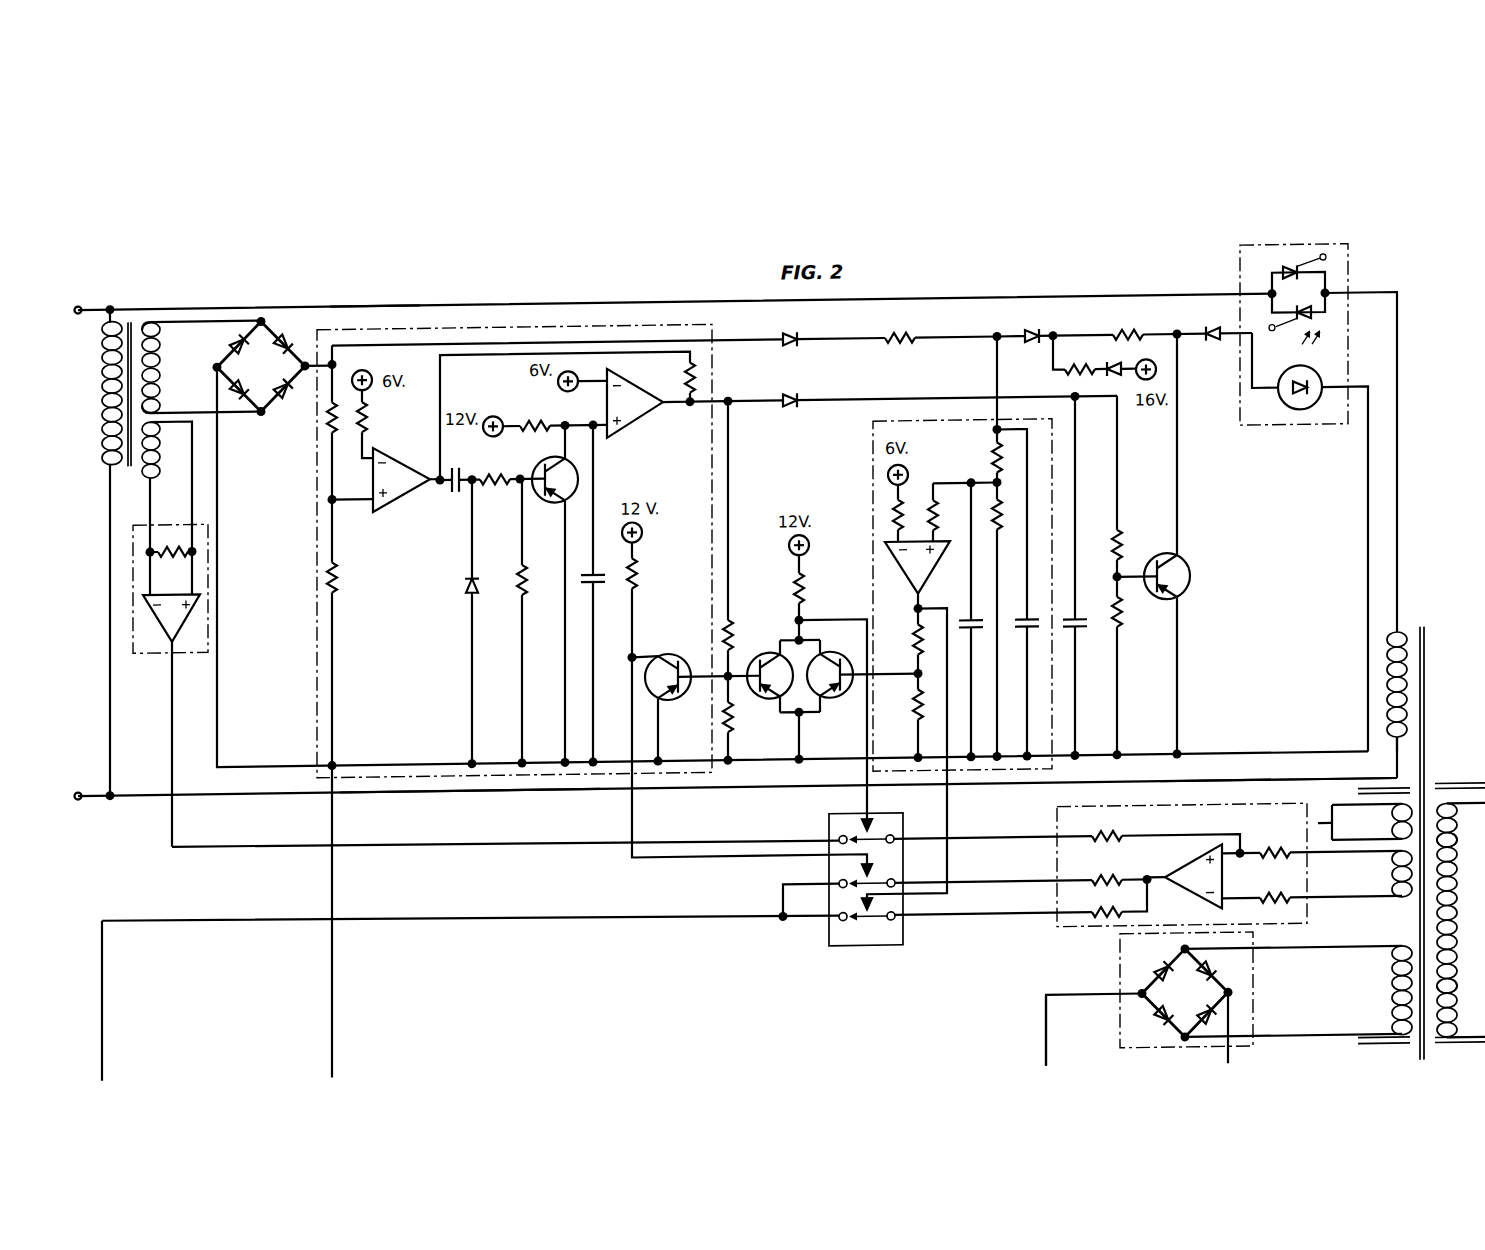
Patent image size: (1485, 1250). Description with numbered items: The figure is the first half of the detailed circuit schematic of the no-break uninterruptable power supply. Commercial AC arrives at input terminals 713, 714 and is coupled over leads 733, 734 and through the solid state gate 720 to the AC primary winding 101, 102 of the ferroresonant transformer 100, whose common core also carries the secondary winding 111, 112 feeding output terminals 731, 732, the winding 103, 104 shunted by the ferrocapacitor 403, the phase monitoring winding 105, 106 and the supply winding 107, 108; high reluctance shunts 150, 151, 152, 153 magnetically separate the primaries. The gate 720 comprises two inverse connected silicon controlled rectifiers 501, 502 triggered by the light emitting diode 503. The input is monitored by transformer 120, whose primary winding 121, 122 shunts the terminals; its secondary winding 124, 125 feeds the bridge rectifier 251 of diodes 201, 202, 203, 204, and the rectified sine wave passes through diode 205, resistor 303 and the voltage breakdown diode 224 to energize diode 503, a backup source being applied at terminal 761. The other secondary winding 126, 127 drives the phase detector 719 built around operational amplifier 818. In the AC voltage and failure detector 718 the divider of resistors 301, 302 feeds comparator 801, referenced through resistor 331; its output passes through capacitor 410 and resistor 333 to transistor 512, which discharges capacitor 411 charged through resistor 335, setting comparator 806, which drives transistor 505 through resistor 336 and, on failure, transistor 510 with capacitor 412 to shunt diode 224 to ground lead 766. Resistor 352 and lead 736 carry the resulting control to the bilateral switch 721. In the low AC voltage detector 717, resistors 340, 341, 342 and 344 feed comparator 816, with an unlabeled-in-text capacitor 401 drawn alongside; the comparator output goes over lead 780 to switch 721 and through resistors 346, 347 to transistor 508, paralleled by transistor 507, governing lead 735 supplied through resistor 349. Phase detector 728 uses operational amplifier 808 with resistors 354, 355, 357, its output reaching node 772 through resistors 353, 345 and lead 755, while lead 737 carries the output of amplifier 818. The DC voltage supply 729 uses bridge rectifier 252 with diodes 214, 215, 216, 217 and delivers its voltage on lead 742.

The ferroresonant transformer 100 is at (1455, 620).
The AC primary winding end 101 is at (1389, 655).
The AC primary winding end 102 is at (1388, 722).
The ferroresonant winding end 103 is at (1372, 822).
The ferroresonant winding end 104 is at (1365, 831).
The phase monitoring winding end 105 is at (1385, 862).
The phase monitoring winding end 106 is at (1385, 881).
The supply winding end 107 is at (1391, 959).
The supply winding end 108 is at (1386, 1012).
The secondary winding end 111 is at (1461, 861).
The secondary winding end 112 is at (1461, 979).
The transformer 120 is at (133, 312).
The primary winding end 121 is at (87, 321).
The primary winding end 122 is at (98, 550).
The secondary winding end 124 is at (201, 344).
The secondary winding end 125 is at (201, 390).
The secondary winding end 126 is at (168, 486).
The secondary winding end 127 is at (164, 501).
The high reluctance shunt 150 is at (1358, 797).
The high reluctance shunt 151 is at (1358, 1049).
The high reluctance shunt 152 is at (1440, 793).
The high reluctance shunt 153 is at (1440, 1050).
The rectifying diode 201 is at (236, 338).
The rectifying diode 202 is at (290, 330).
The rectifying diode 203 is at (236, 386).
The rectifying diode 204 is at (289, 380).
The diode 205 is at (784, 336).
The rectifying diode 214 is at (1149, 956).
The rectifying diode 215 is at (1212, 965).
The rectifying diode 216 is at (1210, 1017).
The rectifying diode 217 is at (1163, 1018).
The voltage breakdown diode 224 is at (1213, 330).
The bridge rectifier 251 is at (275, 369).
The bridge rectifier 252 is at (1177, 992).
The resistor 301 is at (326, 430).
The resistor 302 is at (345, 576).
The resistor 303 is at (903, 347).
The resistor 331 is at (368, 412).
The resistor 333 is at (484, 471).
The resistor 335 is at (540, 419).
The resistor 336 is at (740, 627).
The resistor 340 is at (1005, 514).
The resistor 341 is at (990, 460).
The resistor 342 is at (927, 498).
The resistor 344 is at (888, 515).
The resistor 345 is at (1105, 927).
The resistor 346 is at (908, 640).
The resistor 347 is at (907, 711).
The resistor 349 is at (810, 586).
The resistor 352 is at (643, 577).
The resistor 353 is at (1105, 879).
The resistor 354 is at (1280, 892).
The resistor 355 is at (1273, 845).
The resistor 357 is at (1113, 834).
The capacitor 401 is at (1013, 624).
The ferrocapacitor 403 is at (1278, 759).
The capacitor 410 is at (456, 494).
The capacitor 411 is at (605, 578).
The capacitor 412 is at (1093, 629).
The silicon controlled rectifier 501 is at (1285, 272).
The silicon controlled rectifier 502 is at (1303, 331).
The light emitting diode 503 is at (1292, 412).
The transistor 505 is at (668, 654).
The transistor 507 is at (772, 703).
The transistor 508 is at (843, 703).
The transistor 510 is at (1190, 572).
The transistor 512 is at (558, 499).
The input terminal 713 is at (93, 296).
The input terminal 714 is at (101, 788).
The low AC voltage detector 717 is at (872, 430).
The AC voltage and failure detector 718 is at (497, 316).
The phase detector 719 is at (147, 647).
The solid state gate 720 is at (1282, 436).
The bilateral switch 721 is at (828, 824).
The phase detector 728 is at (1070, 810).
The DC voltage supply 729 is at (1120, 975).
The output terminal 731 is at (1468, 838).
The output terminal 732 is at (1484, 1006).
The lead 733 is at (352, 300).
The lead 734 is at (370, 788).
The lead 735 is at (870, 806).
The lead 736 is at (677, 858).
The lead 737 is at (370, 841).
The lead 742 is at (1046, 1034).
The lead 755 is at (370, 914).
The terminal 761 is at (1128, 386).
The ground lead 766 is at (382, 758).
The node 772 is at (782, 922).
The lead 780 is at (950, 803).
The comparator 801 is at (402, 492).
The comparator 806 is at (640, 416).
The operational amplifier 808 is at (1187, 868).
The comparator 816 is at (885, 549).
The operational amplifier 818 is at (184, 614).